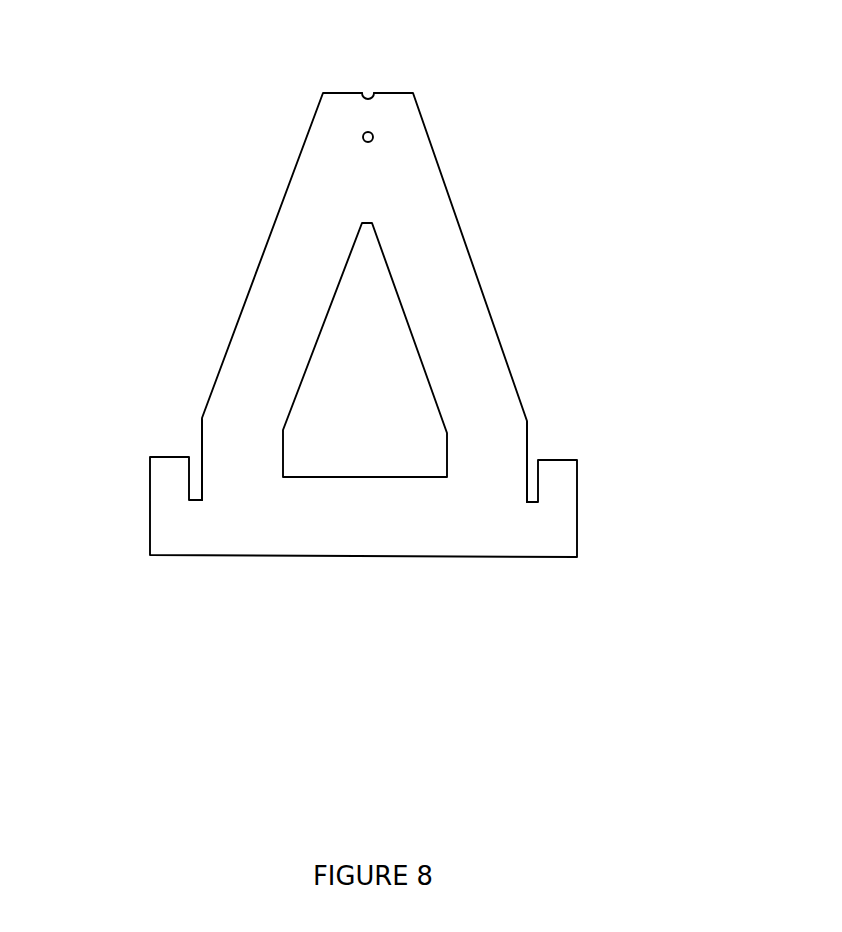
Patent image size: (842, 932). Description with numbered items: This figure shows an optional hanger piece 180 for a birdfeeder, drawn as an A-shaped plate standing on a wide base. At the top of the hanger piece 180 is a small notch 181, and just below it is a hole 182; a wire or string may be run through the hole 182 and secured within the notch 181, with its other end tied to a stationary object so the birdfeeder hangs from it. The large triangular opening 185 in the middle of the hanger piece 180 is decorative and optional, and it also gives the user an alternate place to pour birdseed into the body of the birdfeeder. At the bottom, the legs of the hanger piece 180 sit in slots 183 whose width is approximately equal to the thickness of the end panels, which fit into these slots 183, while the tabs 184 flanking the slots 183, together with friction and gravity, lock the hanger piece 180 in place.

The hanger piece 180 is at (437, 153).
The notch 181 is at (370, 88).
The hole 182 is at (364, 140).
The slots 183 is at (197, 473).
The tabs 184 is at (170, 477).
The opening 185 is at (422, 423).